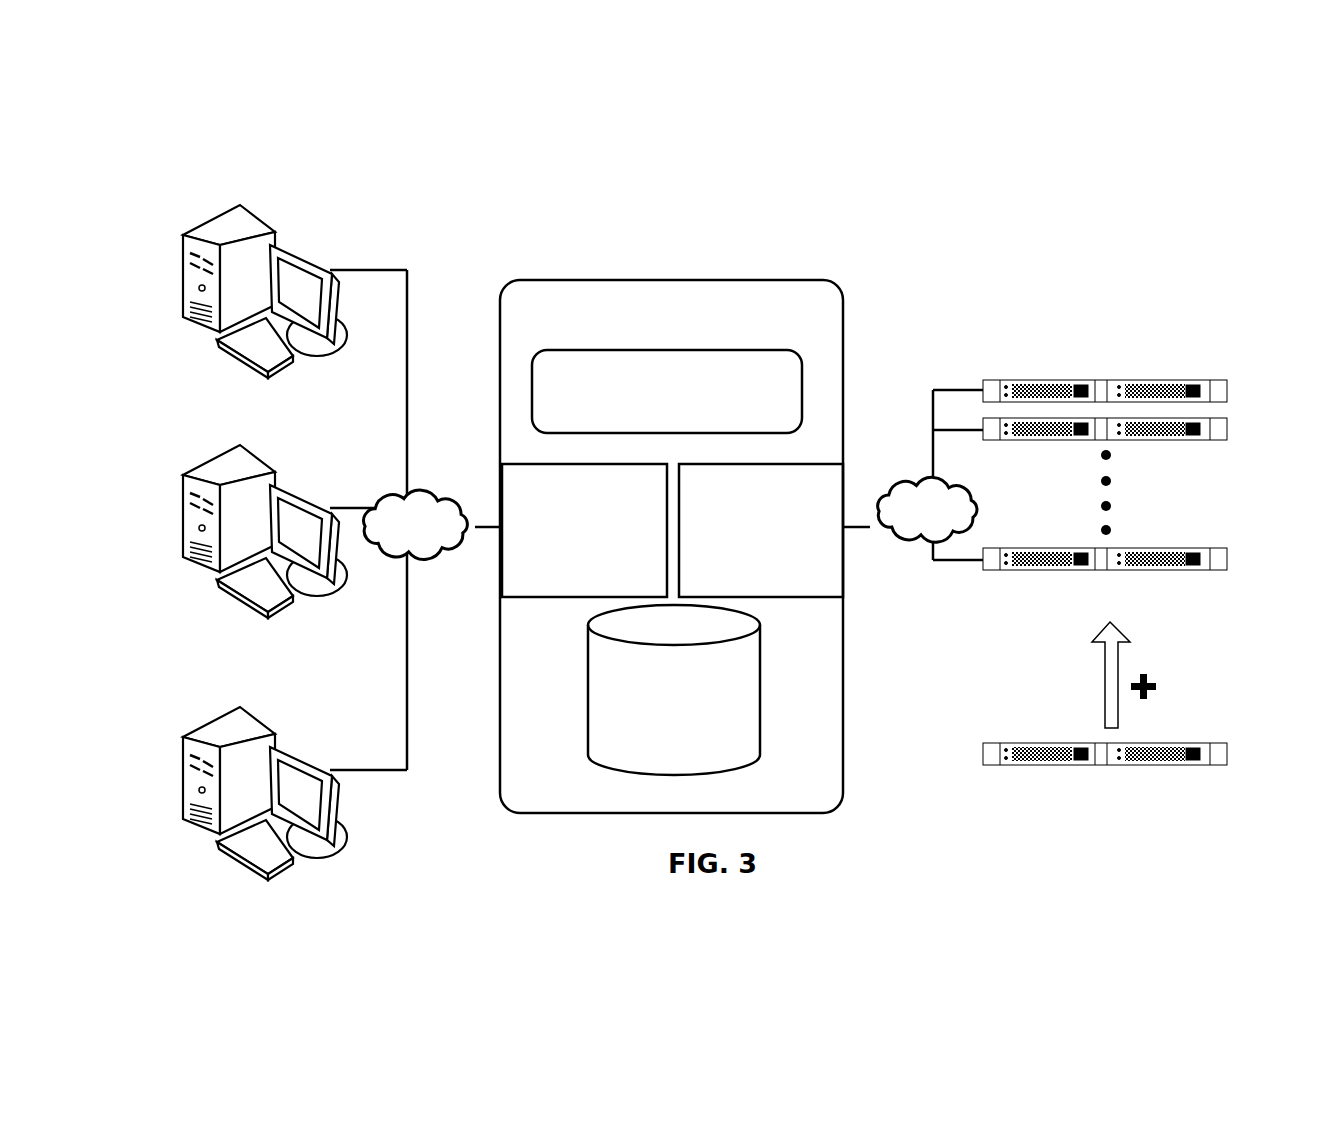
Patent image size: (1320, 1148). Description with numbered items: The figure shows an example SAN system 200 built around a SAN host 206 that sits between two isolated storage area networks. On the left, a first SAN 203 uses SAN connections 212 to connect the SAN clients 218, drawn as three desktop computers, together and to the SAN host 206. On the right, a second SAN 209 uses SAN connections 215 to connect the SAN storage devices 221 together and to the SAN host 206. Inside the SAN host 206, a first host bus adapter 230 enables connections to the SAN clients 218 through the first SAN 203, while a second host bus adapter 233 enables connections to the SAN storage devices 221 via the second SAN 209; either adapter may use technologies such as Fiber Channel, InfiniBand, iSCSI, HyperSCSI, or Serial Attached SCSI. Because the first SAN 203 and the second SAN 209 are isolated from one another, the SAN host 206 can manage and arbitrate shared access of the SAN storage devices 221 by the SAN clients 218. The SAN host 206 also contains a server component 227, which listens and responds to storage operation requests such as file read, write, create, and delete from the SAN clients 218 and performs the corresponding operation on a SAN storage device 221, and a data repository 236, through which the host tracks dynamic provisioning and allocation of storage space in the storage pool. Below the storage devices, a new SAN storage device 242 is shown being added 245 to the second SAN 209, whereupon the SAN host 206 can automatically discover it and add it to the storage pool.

The SAN system 200 is at (703, 122).
The first SAN 203 is at (417, 563).
The SAN host 206 is at (671, 546).
The second SAN 209 is at (918, 547).
The SAN connections 212 is at (407, 381).
The SAN connections 215 is at (933, 413).
The SAN clients 218 is at (298, 258).
The SAN storage devices 221 is at (1205, 388).
The server component 227 is at (667, 391).
The first host bus adapter 230 is at (584, 530).
The second host bus adapter 233 is at (761, 530).
The data repository 236 is at (674, 690).
The new SAN storage device 242 is at (1208, 751).
The addition 245 is at (1105, 688).